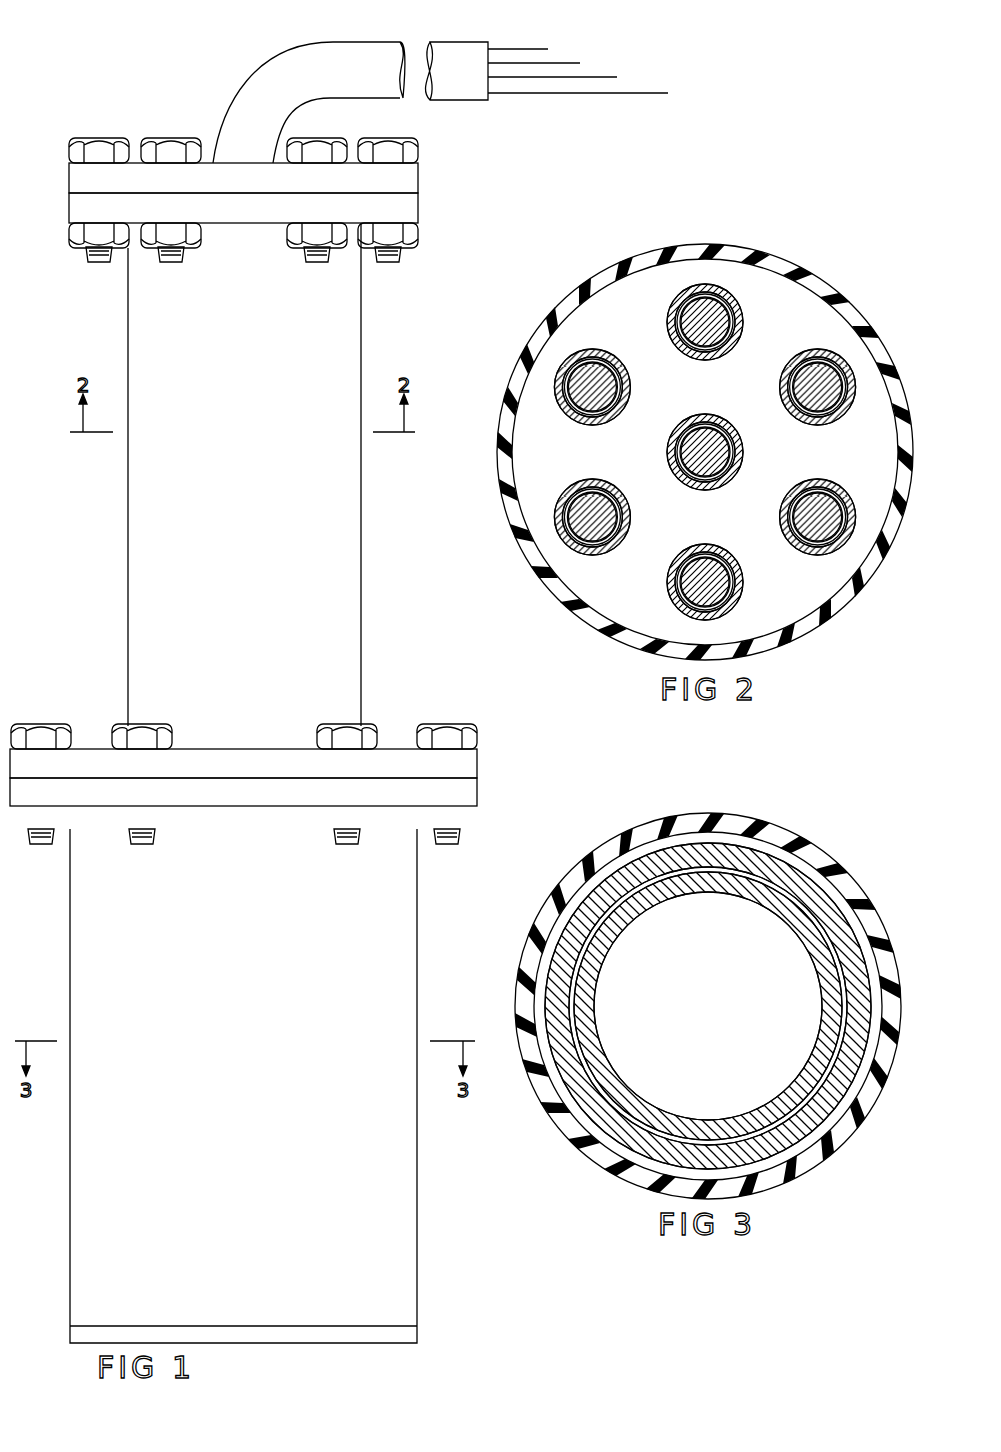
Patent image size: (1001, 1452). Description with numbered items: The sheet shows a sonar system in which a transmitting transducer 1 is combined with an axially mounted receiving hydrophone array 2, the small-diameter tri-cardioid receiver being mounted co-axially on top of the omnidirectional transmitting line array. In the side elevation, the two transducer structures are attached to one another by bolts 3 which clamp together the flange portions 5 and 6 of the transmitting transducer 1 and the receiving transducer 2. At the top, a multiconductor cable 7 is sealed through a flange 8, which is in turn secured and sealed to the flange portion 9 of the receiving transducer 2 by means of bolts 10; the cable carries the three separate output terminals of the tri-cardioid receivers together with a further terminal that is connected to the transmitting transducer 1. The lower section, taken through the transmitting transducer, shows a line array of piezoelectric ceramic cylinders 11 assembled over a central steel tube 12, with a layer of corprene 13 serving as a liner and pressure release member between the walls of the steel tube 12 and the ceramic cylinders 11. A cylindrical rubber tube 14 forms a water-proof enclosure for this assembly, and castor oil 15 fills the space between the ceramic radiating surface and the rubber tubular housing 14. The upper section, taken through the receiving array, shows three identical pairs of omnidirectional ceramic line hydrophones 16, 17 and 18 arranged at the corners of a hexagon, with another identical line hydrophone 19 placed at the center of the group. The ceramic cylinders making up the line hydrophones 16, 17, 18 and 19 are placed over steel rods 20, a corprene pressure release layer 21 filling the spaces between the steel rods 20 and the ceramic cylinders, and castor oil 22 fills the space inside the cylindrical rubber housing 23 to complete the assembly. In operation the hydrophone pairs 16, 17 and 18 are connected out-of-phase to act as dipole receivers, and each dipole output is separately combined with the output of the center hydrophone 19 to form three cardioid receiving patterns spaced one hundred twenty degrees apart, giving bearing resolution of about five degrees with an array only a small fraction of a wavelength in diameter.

In FIG. 1, the transmitting transducer 1 is at (417, 1200).
In FIG. 1, the receiving hydrophone array 2 is at (361, 663).
In FIG. 1, the bolts 3 is at (477, 737).
In FIG. 1, the flange portion 5 is at (477, 792).
In FIG. 1, the flange portion 6 is at (477, 763).
In FIG. 1, the multiconductor cable 7 is at (262, 66).
In FIG. 1, the flange 8 is at (420, 178).
In FIG. 1, the flange portion 9 is at (420, 208).
In FIG. 1, the bolts 10 is at (420, 158).
In FIG. 3, the piezoelectric ceramic cylinders 11 is at (570, 933).
In FIG. 3, the central steel tube 12 is at (640, 898).
In FIG. 3, the layer of corprene 13 is at (733, 872).
In FIG. 3, the cylindrical rubber tube 14 is at (803, 867).
In FIG. 3, the castor oil 15 is at (830, 897).
In FIG. 2, the omnidirectional ceramic line hydrophones 16 is at (717, 295).
In FIG. 2, the omnidirectional ceramic line hydrophones 17 is at (558, 382).
In FIG. 2, the omnidirectional ceramic line hydrophones 18 is at (828, 353).
In FIG. 2, the line hydrophone 19 is at (717, 482).
In FIG. 2, the steel rods 20 is at (575, 385).
In FIG. 2, the corprene pressure release layer 21 is at (598, 347).
In FIG. 2, the castor oil 22 is at (625, 587).
In FIG. 2, the cylindrical rubber housing 23 is at (567, 297).